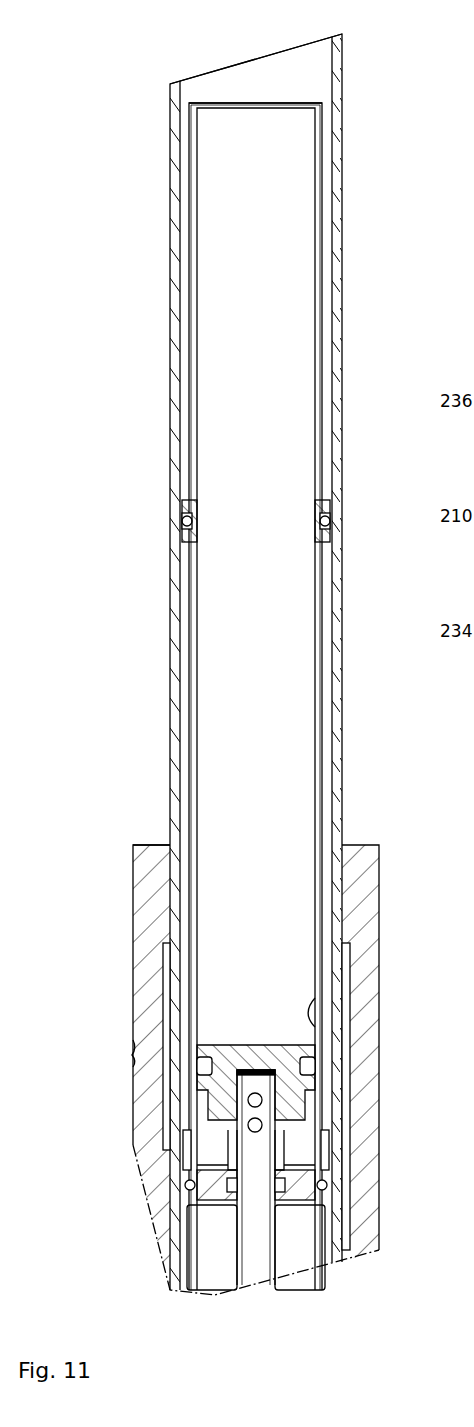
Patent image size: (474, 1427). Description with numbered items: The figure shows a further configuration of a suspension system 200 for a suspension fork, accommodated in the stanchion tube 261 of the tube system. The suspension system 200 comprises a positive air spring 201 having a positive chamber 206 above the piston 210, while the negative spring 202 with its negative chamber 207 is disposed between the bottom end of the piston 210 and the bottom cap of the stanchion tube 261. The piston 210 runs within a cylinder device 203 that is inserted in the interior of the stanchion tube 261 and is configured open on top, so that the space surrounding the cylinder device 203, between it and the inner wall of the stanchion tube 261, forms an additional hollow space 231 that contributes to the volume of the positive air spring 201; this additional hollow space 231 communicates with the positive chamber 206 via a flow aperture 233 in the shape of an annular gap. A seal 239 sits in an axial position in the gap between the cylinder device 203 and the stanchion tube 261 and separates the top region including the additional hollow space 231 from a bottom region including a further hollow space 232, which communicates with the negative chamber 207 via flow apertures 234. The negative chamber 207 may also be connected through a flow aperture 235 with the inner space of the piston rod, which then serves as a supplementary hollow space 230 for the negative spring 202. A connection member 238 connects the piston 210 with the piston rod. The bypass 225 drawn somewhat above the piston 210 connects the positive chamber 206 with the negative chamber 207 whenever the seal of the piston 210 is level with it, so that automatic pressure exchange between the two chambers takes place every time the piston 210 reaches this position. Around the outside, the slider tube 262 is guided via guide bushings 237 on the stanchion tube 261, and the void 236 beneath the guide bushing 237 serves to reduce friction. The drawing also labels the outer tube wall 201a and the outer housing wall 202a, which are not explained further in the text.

The suspension system 200 is at (106, 61).
The positive air spring 201 is at (208, 313).
The outer tube wall 201a is at (168, 228).
The cylinder device 203 is at (285, 102).
The flow aperture 233 is at (196, 106).
The additional hollow space 231 is at (182, 450).
The stanchion tube 261 is at (176, 398).
The further hollow space 232 is at (190, 598).
The positive chamber 206 is at (226, 668).
The seal 239 is at (180, 521).
The guide bushing 237 is at (365, 883).
The slider tube 262 is at (138, 880).
The void 236 is at (345, 966).
The bypass 225 is at (336, 1017).
The piston 210 is at (284, 1060).
The flow aperture 235 is at (262, 1070).
The connection member 238 is at (253, 1094).
The supplementary hollow space 230 is at (258, 1250).
The negative spring 202 is at (210, 1140).
The flow apertures 234 is at (192, 1115).
The negative chamber 207 is at (306, 1126).
The housing outer wall 202a is at (383, 1146).